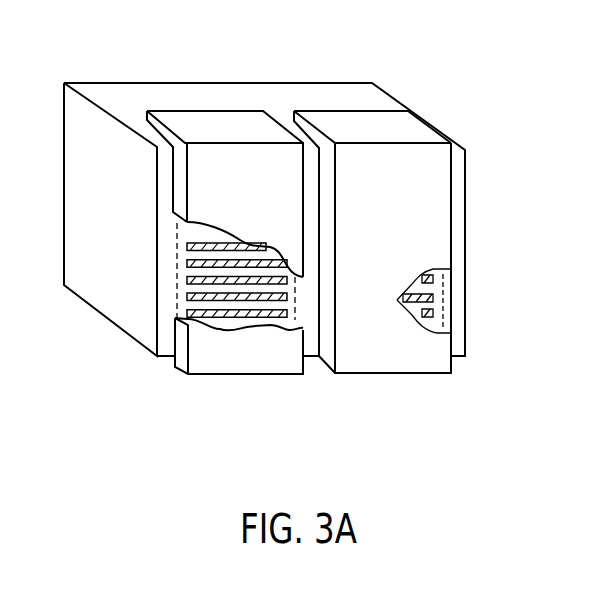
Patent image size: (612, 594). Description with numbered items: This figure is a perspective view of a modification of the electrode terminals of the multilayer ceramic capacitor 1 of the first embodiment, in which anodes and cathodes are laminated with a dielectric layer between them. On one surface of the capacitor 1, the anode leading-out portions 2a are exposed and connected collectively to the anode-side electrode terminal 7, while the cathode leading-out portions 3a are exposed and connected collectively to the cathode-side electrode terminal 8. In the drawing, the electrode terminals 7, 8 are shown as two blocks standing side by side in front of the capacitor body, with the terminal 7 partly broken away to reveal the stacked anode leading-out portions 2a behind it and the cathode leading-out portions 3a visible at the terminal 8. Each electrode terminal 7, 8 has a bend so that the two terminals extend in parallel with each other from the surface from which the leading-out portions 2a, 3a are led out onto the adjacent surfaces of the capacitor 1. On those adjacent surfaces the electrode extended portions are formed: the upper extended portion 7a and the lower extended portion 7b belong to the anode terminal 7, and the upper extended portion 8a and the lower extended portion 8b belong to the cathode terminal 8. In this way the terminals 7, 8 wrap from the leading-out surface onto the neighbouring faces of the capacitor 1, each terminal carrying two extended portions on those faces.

The capacitor 1 is at (348, 97).
The electrode terminal 7 is at (160, 223).
The electrode extended portion 7a is at (220, 123).
The electrode extended portion 7b is at (180, 368).
The anode leading-out portions 2a is at (183, 269).
The electrode terminal 8 is at (420, 244).
The electrode extended portion 8a is at (403, 128).
The electrode extended portion 8b is at (400, 375).
The cathode leading-out portions 3a is at (400, 300).